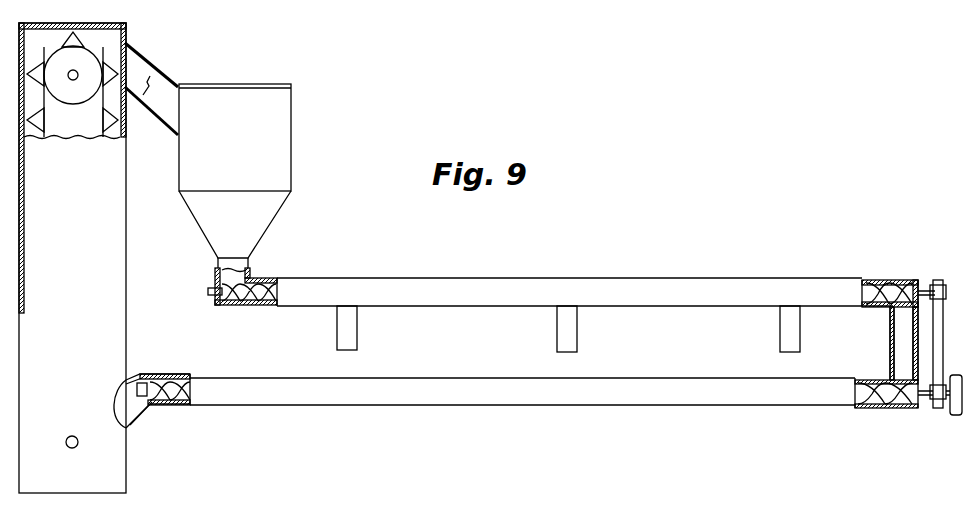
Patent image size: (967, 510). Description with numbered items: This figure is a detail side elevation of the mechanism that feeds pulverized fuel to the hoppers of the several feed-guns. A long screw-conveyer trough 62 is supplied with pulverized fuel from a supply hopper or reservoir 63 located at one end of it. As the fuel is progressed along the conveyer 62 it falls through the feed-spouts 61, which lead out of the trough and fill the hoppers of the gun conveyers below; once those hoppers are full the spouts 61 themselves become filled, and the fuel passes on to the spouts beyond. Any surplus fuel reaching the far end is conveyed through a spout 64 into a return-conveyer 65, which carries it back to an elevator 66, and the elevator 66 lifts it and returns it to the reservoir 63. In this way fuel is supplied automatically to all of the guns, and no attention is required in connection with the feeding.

The feed-spouts 61 is at (568, 338).
The screw-conveyer trough 62 is at (571, 285).
The supply hopper 63 is at (235, 167).
The spout 64 is at (913, 347).
The return-conveyer 65 is at (523, 401).
The elevator 66 is at (98, 258).